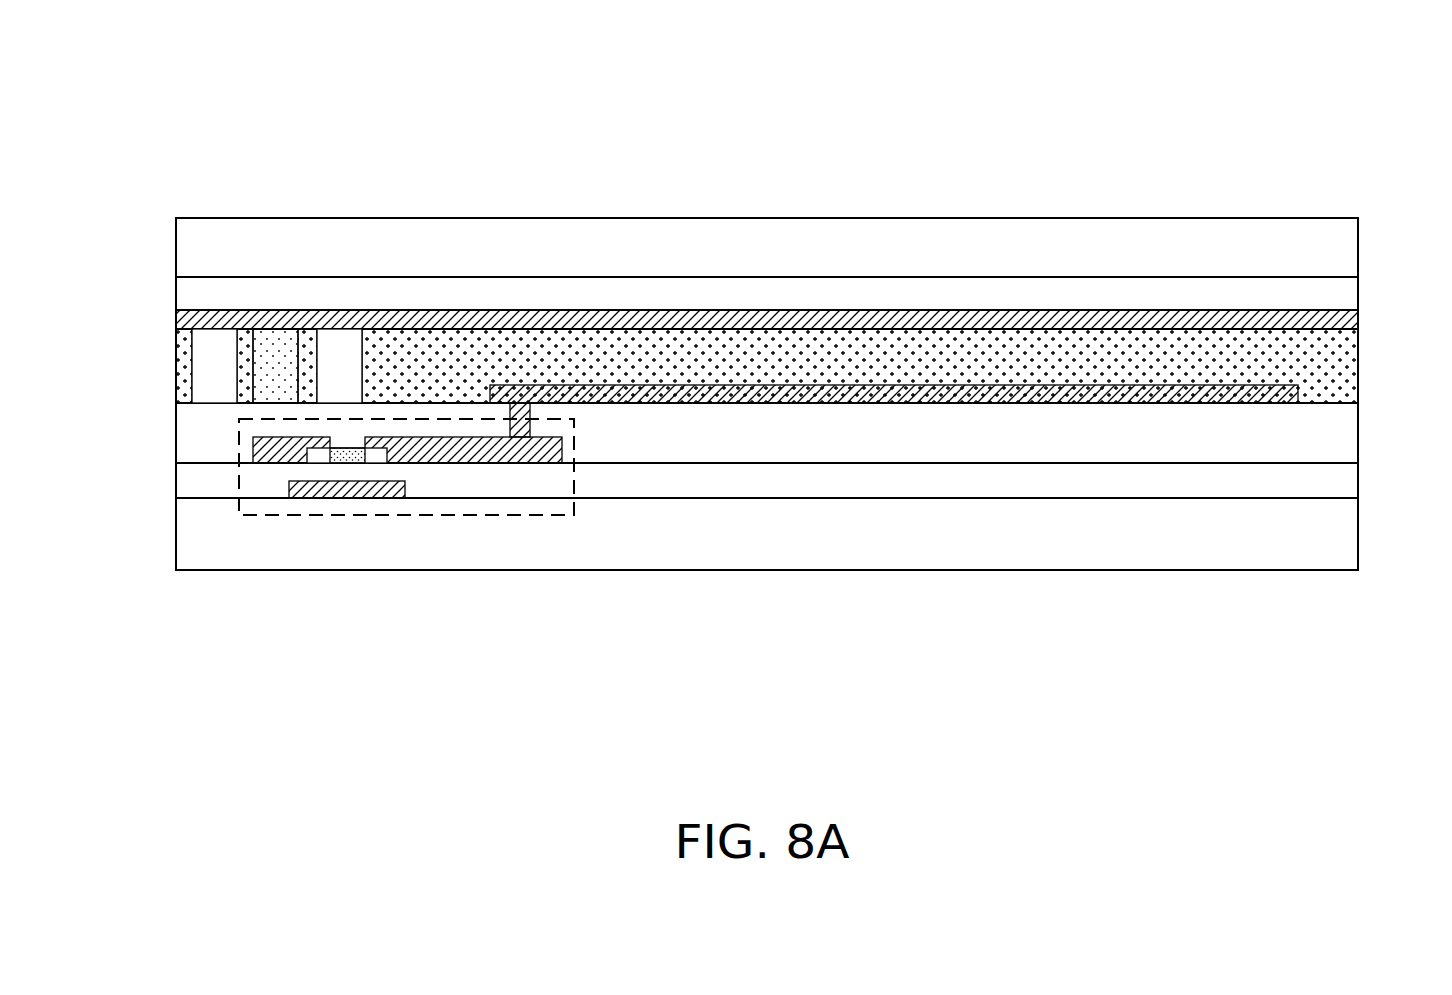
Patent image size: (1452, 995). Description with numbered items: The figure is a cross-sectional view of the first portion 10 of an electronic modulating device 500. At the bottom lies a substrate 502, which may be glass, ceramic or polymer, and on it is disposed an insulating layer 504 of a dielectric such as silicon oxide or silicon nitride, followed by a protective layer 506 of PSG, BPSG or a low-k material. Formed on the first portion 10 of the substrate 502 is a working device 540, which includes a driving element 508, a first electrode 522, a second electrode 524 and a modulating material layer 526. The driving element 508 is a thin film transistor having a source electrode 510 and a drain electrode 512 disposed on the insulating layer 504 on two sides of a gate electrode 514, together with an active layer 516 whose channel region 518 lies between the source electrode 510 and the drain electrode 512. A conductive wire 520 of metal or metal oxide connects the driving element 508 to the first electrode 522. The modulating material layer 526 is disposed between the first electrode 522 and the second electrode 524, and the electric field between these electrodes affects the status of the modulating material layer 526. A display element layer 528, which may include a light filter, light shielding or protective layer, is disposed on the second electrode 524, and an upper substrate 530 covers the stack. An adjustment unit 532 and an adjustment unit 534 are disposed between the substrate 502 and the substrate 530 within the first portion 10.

The first portion 10 is at (768, 207).
The electronic modulating device 500 is at (163, 137).
The substrate 502 is at (1350, 535).
The insulating layer 504 is at (1350, 480).
The protective layer 506 is at (1350, 432).
The driving element 508 is at (237, 425).
The source electrode 510 is at (265, 455).
The drain electrode 512 is at (457, 453).
The gate electrode 514 is at (348, 495).
The active layer 516 is at (318, 455).
The channel region 518 is at (370, 458).
The conductive wire 520 is at (520, 428).
The first electrode 522 is at (1298, 397).
The second electrode 524 is at (1350, 318).
The modulating material layer 526 is at (1350, 360).
The display element layer 528 is at (1350, 293).
The substrate 530 is at (1350, 250).
The adjustment unit 532 is at (278, 343).
The adjustment unit 534 is at (213, 343).
The working device 540 is at (1345, 42).